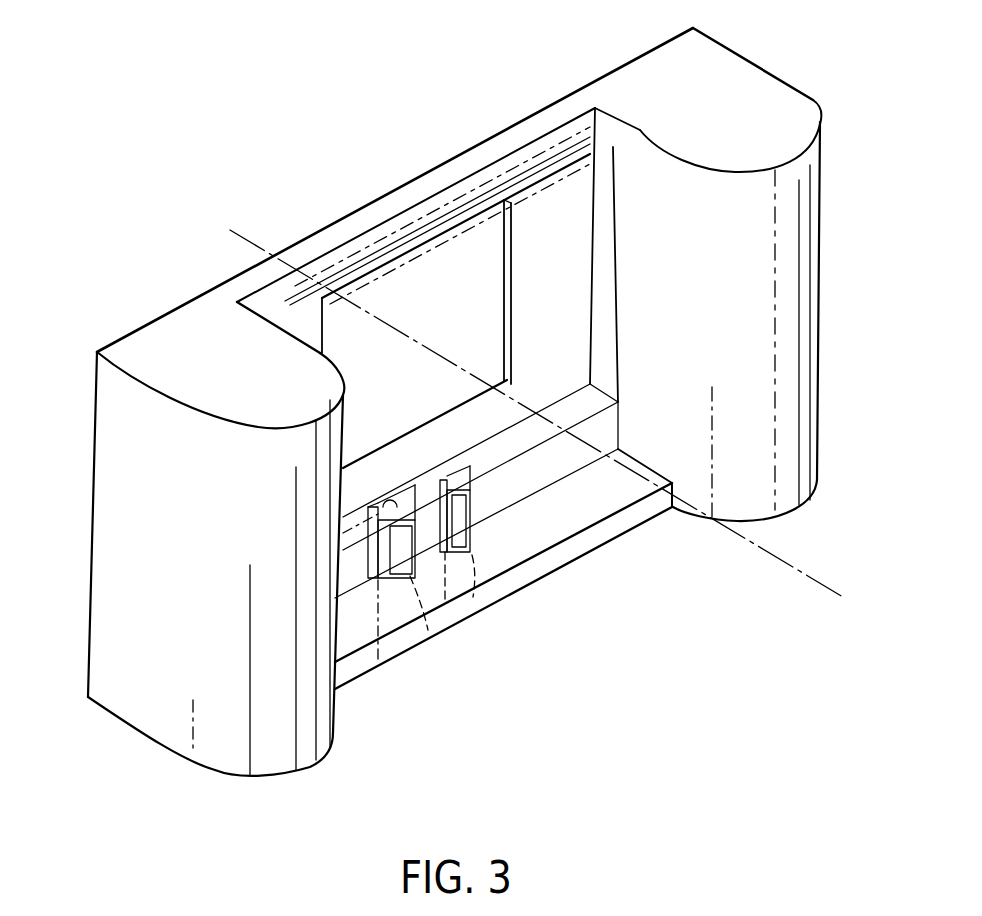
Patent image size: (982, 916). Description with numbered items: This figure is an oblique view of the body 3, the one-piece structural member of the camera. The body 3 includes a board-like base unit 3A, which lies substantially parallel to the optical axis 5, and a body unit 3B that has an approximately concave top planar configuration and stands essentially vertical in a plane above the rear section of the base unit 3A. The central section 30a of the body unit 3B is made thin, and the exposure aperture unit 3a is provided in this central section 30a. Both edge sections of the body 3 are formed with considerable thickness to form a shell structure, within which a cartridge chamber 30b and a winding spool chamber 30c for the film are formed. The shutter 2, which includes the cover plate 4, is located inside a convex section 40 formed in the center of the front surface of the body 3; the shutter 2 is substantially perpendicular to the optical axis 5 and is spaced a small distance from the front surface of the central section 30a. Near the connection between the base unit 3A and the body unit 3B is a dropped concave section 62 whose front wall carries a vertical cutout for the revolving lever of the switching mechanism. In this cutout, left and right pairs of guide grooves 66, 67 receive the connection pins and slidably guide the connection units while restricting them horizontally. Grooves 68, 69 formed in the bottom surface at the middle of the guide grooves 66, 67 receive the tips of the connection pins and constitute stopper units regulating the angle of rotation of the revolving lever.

The shutter 2 is at (618, 118).
The body 3 is at (877, 258).
The base unit 3A is at (535, 601).
The body unit 3B is at (516, 112).
The exposure aperture unit 3a is at (326, 324).
The cover plate 4 is at (575, 122).
The optical axis 5 is at (757, 557).
The central section 30a is at (403, 198).
The cartridge chamber 30b is at (798, 128).
The winding spool chamber 30c is at (172, 700).
The convex section 40 is at (673, 177).
The dropped concave section 62 is at (443, 561).
The guide groove 66 is at (463, 470).
The guide groove 67 is at (373, 663).
The groove 68 is at (468, 600).
The groove 69 is at (425, 630).